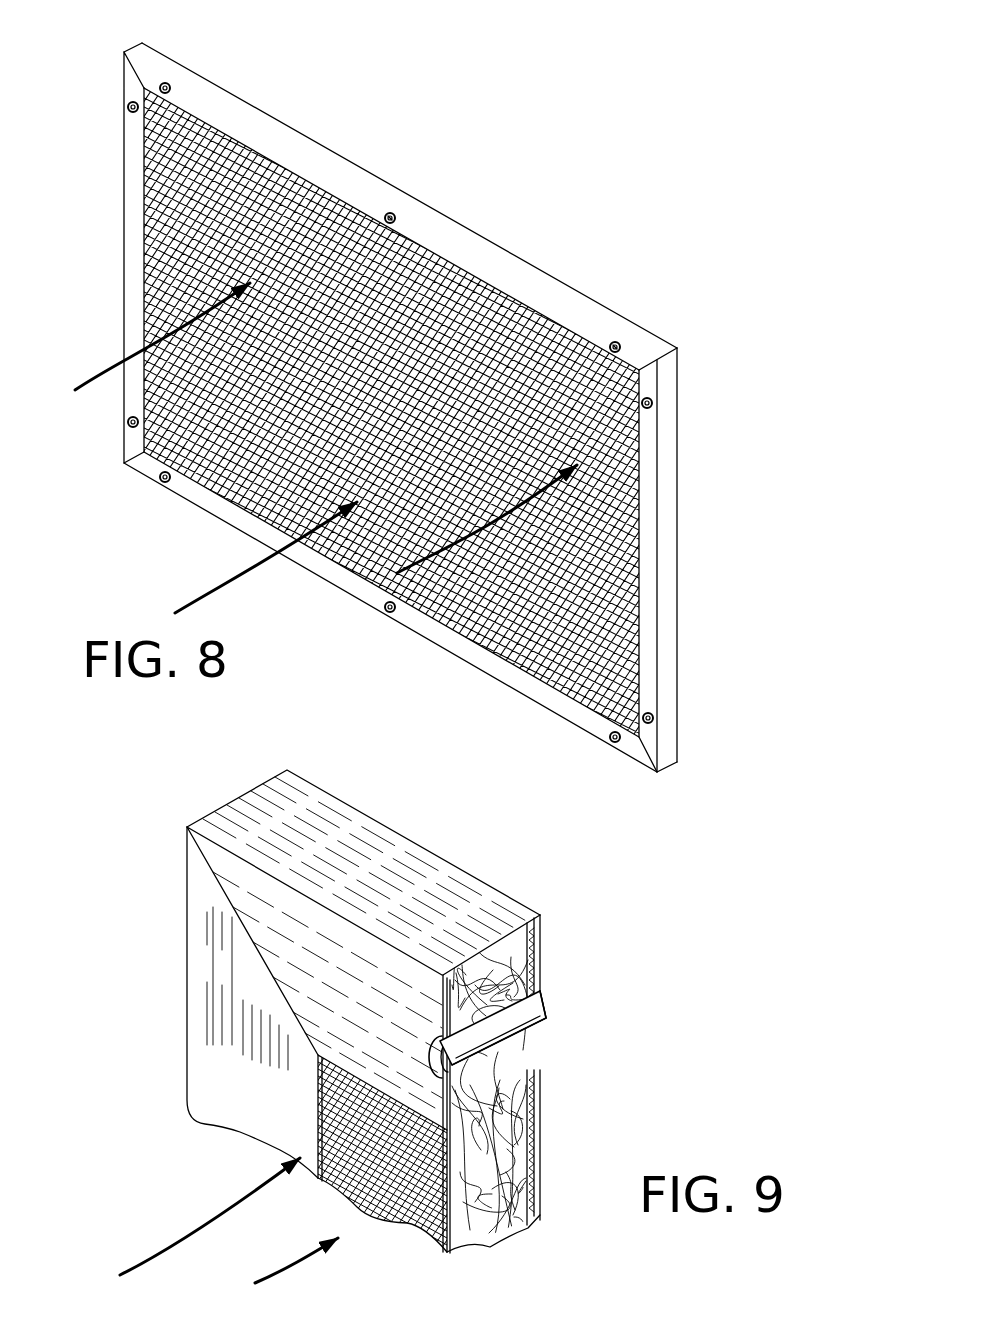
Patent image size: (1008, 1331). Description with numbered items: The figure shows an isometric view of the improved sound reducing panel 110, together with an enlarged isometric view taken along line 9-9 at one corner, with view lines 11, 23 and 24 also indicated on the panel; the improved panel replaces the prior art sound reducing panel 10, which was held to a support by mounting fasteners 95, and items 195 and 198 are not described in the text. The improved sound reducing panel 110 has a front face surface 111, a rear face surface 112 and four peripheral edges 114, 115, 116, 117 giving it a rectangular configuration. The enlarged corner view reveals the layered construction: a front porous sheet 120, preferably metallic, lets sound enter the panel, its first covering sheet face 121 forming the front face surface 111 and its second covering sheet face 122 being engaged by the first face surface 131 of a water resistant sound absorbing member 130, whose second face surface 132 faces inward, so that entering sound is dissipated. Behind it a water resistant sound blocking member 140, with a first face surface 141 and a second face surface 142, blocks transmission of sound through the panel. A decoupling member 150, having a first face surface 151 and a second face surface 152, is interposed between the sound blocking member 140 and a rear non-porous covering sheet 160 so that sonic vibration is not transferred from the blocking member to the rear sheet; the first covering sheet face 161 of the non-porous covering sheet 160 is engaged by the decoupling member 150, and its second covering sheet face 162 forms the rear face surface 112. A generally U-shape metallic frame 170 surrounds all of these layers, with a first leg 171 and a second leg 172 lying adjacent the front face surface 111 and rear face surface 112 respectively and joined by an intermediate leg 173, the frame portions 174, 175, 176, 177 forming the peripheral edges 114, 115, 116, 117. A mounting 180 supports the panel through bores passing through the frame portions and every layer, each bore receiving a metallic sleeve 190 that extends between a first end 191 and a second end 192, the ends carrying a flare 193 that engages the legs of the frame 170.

In FIG. 8, the prior art sound reducing panel 10 is at (580, 204).
In FIG. 8, the improved sound reducing panel 110 is at (632, 262).
In FIG. 9, the improved sound reducing panel 110 is at (668, 1012).
In FIG. 8, the line 9- 9 is at (197, 72).
In FIG. 8, the view line 11 is at (545, 275).
In FIG. 8, the view line 23 is at (345, 240).
In FIG. 8, the view line 24 is at (512, 293).
In FIG. 8, the mounting fasteners 95 is at (177, 68).
In FIG. 8, the front face surface 111 is at (605, 398).
In FIG. 9, the front face surface 111 is at (330, 1180).
In FIG. 8, the rear face surface 112 is at (678, 435).
In FIG. 9, the rear face surface 112 is at (540, 1155).
In FIG. 8, the peripheral edge 114 is at (213, 503).
In FIG. 8, the peripheral edge 115 is at (714, 566).
In FIG. 8, the peripheral edge 116 is at (330, 160).
In FIG. 9, the peripheral edge 116 is at (240, 813).
In FIG. 8, the peripheral edge 117 is at (128, 190).
In FIG. 9, the peripheral edge 117 is at (193, 933).
In FIG. 8, the front porous sheet 120 is at (162, 238).
In FIG. 9, the front porous sheet 120 is at (450, 1253).
In FIG. 8, the first covering sheet face 121 is at (593, 640).
In FIG. 9, the first covering sheet face 121 is at (353, 1187).
In FIG. 9, the second covering sheet face 122 is at (412, 1227).
In FIG. 8, the water resistant sound absorbing member 130 is at (163, 278).
In FIG. 9, the water resistant sound absorbing member 130 is at (472, 1237).
In FIG. 9, the first face surface 131 is at (427, 1237).
In FIG. 9, the second face surface 132 is at (512, 1218).
In FIG. 8, the water resistant sound blocking member 140 is at (165, 322).
In FIG. 9, the water resistant sound blocking member 140 is at (528, 923).
In FIG. 9, the first face surface 141 is at (513, 937).
In FIG. 9, the second face surface 142 is at (538, 978).
In FIG. 8, the decoupling member 150 is at (165, 355).
In FIG. 9, the decoupling member 150 is at (537, 950).
In FIG. 9, the first face surface 151 is at (533, 933).
In FIG. 9, the second face surface 152 is at (538, 963).
In FIG. 8, the non-porous covering sheet 160 is at (172, 423).
In FIG. 9, the non-porous covering sheet 160 is at (535, 1198).
In FIG. 9, the first covering sheet face 161 is at (537, 1217).
In FIG. 9, the second covering sheet face 162 is at (537, 1182).
In FIG. 8, the frame 170 is at (327, 568).
In FIG. 8, the first leg 171 is at (180, 488).
In FIG. 9, the first leg 171 is at (197, 897).
In FIG. 9, the second leg 172 is at (573, 1033).
In FIG. 9, the intermediate leg 173 is at (223, 818).
In FIG. 8, the frame portion 174 is at (420, 622).
In FIG. 8, the frame portion 175 is at (665, 522).
In FIG. 8, the frame portion 176 is at (267, 132).
In FIG. 9, the frame portion 176 is at (207, 828).
In FIG. 8, the frame portion 177 is at (133, 158).
In FIG. 9, the frame portion 177 is at (193, 986).
In FIG. 8, the mounting 180 is at (132, 105).
In FIG. 9, the mounting 180 is at (430, 1045).
In FIG. 8, the metallic sleeve 190 is at (185, 90).
In FIG. 9, the metallic sleeve 190 is at (425, 1072).
In FIG. 9, the first end 191 is at (445, 1073).
In FIG. 9, the second end 192 is at (537, 1008).
In FIG. 9, the flare 193 is at (478, 1118).
In FIG. 8, the fastener pin 195 is at (422, 212).
In FIG. 9, the fastener pin 195 is at (543, 1023).
In FIG. 8, the corner of frame 198 is at (703, 350).